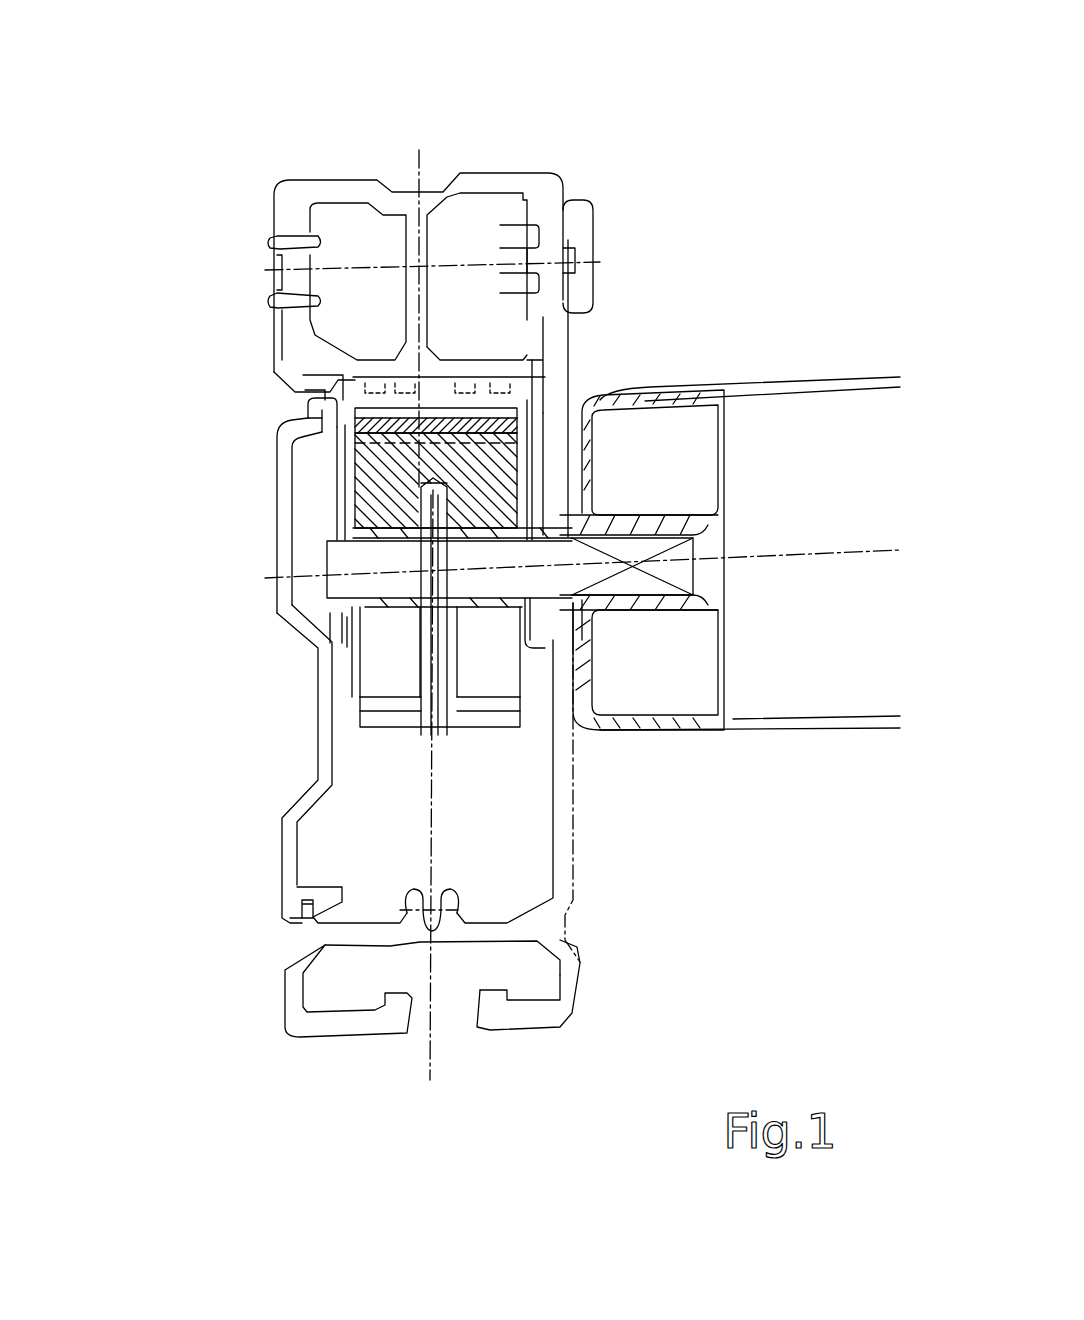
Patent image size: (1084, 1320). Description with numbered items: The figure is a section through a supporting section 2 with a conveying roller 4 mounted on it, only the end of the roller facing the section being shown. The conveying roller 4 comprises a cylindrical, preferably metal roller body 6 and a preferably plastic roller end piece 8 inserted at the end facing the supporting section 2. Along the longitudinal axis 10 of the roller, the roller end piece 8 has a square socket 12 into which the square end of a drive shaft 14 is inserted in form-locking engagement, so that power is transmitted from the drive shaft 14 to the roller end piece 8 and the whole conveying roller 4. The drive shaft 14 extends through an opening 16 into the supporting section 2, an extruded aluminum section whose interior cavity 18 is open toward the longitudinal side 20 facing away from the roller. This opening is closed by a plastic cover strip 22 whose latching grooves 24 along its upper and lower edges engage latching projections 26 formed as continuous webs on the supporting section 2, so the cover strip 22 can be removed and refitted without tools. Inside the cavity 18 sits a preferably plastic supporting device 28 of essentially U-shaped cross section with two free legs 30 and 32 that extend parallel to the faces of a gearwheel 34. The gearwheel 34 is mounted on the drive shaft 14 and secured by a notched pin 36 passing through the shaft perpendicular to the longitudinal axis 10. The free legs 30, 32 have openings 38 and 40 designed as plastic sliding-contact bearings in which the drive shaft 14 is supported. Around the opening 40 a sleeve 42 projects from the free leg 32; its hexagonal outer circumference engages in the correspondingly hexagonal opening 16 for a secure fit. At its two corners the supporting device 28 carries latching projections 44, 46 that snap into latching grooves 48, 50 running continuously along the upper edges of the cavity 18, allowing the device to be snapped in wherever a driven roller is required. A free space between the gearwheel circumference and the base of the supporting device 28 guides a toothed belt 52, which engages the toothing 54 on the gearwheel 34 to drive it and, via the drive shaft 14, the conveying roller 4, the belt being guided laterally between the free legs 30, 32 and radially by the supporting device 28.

The supporting section 2 is at (370, 190).
The conveying roller 4 is at (787, 377).
The roller body 6 is at (853, 383).
The roller end piece 8 is at (545, 525).
The longitudinal axis 10 is at (797, 548).
The socket 12 is at (697, 572).
The drive shaft 14 is at (637, 560).
The opening 16 is at (568, 623).
The cavity 18 is at (507, 813).
The longitudinal side 20 is at (237, 380).
The cover strip 22 is at (292, 862).
The latching grooves 24 is at (327, 413).
The latching projections 26 is at (326, 402).
The supporting device 28 is at (388, 397).
The free leg 30 is at (345, 497).
The free leg 32 is at (533, 455).
The gearwheel 34 is at (390, 647).
The notched pin 36 is at (422, 650).
The opening 38 is at (345, 603).
The opening 40 is at (603, 400).
The sleeve 42 is at (550, 605).
The latching projection 44 is at (345, 383).
The latching projection 46 is at (532, 360).
The latching groove 48 is at (328, 380).
The latching groove 50 is at (527, 455).
The toothed belt 52 is at (435, 480).
The toothing 54 is at (383, 720).